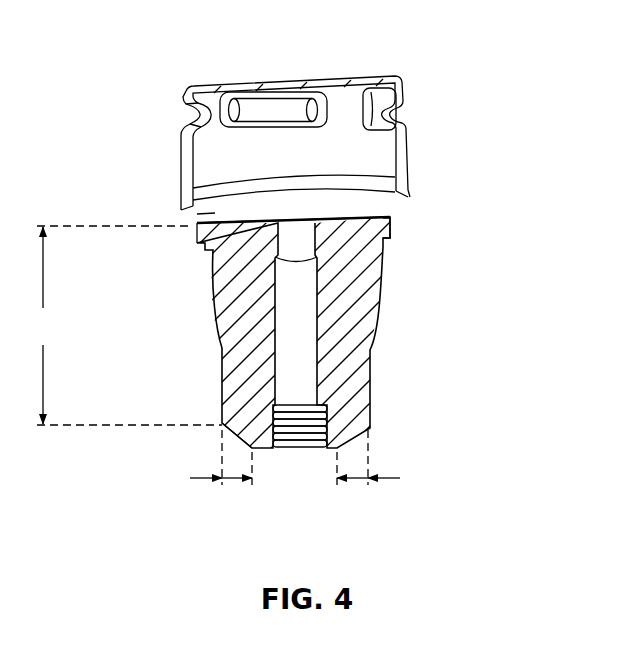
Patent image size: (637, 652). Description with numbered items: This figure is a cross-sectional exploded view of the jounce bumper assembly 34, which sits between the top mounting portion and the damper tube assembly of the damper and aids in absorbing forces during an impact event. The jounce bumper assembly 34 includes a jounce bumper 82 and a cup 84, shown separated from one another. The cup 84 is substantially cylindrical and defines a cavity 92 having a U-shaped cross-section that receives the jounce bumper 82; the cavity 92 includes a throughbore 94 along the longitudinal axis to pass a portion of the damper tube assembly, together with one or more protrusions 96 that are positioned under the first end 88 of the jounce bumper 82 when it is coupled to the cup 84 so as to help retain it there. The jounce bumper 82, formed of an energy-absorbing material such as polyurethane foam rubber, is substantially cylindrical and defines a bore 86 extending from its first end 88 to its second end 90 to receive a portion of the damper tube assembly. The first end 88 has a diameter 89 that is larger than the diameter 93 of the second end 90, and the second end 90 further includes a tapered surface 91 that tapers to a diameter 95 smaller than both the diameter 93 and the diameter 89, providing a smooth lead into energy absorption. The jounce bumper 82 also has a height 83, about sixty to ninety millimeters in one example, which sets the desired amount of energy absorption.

The jounce bumper assembly 34 is at (470, 52).
The jounce bumper 82 is at (408, 290).
The height 83 is at (122, 325).
The cup 84 is at (415, 143).
The bore 86 is at (317, 338).
The first end 88 is at (365, 208).
The diameter 89 is at (210, 203).
The second end 90 is at (332, 455).
The tapered surface 91 is at (222, 427).
The cavity 92 is at (196, 234).
The diameter 93 is at (388, 478).
The throughbore 94 is at (313, 77).
The diameter 95 is at (253, 476).
The protrusions 96 is at (192, 127).